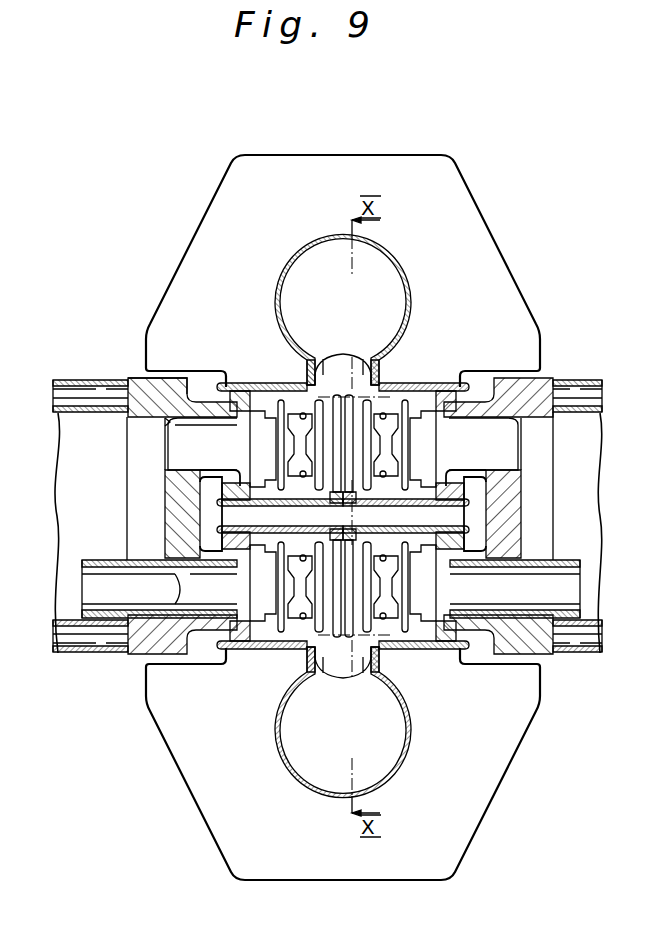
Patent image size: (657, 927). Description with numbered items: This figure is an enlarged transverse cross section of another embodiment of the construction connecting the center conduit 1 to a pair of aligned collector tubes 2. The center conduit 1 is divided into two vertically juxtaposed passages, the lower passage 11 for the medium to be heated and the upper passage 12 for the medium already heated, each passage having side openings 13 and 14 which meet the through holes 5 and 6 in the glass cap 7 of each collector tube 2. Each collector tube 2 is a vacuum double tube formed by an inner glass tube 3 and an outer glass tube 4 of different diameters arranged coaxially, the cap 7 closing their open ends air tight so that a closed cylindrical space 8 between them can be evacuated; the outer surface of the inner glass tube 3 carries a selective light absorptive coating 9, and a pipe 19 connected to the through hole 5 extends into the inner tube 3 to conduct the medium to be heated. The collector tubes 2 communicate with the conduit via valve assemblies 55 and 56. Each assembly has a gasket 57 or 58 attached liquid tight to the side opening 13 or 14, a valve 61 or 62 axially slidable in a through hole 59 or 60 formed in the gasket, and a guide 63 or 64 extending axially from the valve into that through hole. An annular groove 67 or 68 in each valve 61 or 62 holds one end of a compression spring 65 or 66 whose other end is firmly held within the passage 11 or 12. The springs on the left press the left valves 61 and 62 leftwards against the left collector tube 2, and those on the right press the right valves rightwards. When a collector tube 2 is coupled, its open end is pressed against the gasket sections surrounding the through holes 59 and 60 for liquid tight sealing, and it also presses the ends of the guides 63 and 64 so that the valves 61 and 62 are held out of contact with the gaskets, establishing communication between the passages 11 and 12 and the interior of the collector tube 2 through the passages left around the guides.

The center conduit 1 is at (394, 289).
The collector tube 2 is at (598, 450).
The inner glass tube 3 is at (311, 486).
The outer glass tube 4 is at (118, 378).
The through hole 5 is at (196, 655).
The through hole 6 is at (165, 421).
The glass cap 7 is at (175, 378).
The cylindrical space 8 is at (64, 379).
The selective light absorptive coating 9 is at (94, 652).
The lower passage 11 is at (327, 673).
The upper passage 12 is at (265, 383).
The side opening 13 is at (243, 654).
The side opening 14 is at (258, 514).
The pipe 19 is at (96, 561).
The valve assembly 55 is at (271, 604).
The valve assembly 56 is at (271, 462).
The gasket 57 is at (443, 664).
The gasket 58 is at (240, 384).
The through hole 59 is at (236, 582).
The through hole 60 is at (234, 440).
The valve 61 is at (343, 517).
The valve 62 is at (281, 396).
The guide 63 is at (240, 654).
The guide 64 is at (176, 466).
The compression spring 65 is at (290, 590).
The compression spring 66 is at (367, 485).
The annular groove 67 is at (295, 633).
The annular groove 68 is at (381, 360).